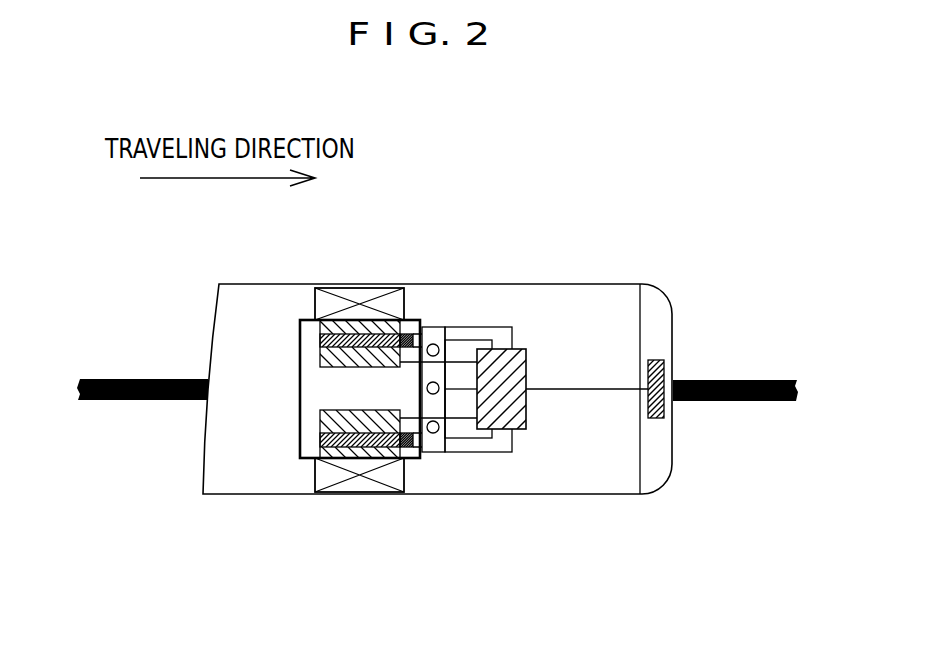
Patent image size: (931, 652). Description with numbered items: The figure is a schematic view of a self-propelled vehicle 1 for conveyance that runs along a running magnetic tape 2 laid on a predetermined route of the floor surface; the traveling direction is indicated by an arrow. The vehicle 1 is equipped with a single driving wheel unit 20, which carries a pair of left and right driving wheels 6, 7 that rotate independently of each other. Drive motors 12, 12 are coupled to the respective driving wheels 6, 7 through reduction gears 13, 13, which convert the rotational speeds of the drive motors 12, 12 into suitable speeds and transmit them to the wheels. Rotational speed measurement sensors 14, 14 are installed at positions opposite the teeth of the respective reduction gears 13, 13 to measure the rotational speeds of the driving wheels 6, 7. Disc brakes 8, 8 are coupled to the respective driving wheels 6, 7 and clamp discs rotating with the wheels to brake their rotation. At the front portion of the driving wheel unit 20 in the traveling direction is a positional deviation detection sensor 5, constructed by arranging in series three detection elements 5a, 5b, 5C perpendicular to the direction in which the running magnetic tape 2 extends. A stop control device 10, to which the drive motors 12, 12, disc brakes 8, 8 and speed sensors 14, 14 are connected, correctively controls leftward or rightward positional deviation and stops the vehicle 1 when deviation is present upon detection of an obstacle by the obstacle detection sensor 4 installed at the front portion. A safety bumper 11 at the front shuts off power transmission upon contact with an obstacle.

The self-propelled vehicle for conveyance 1 is at (693, 225).
The running magnetic tape 2 is at (743, 402).
The obstacle detection sensor 4 is at (665, 368).
The positional deviation detection sensor 5 is at (426, 330).
The detection element 5a is at (434, 344).
The detection element 5b is at (438, 383).
The detection element 5C is at (435, 433).
The driving wheel 6 is at (357, 288).
The driving wheel 7 is at (360, 494).
The disc brake 8 is at (302, 320).
The stop control device 10 is at (527, 377).
The safety bumper 11 is at (653, 463).
The drive motor 12 is at (320, 348).
The reduction gear 13 is at (320, 334).
The rotational speed measurement sensor 14 is at (410, 334).
The driving wheel unit 20 is at (281, 373).